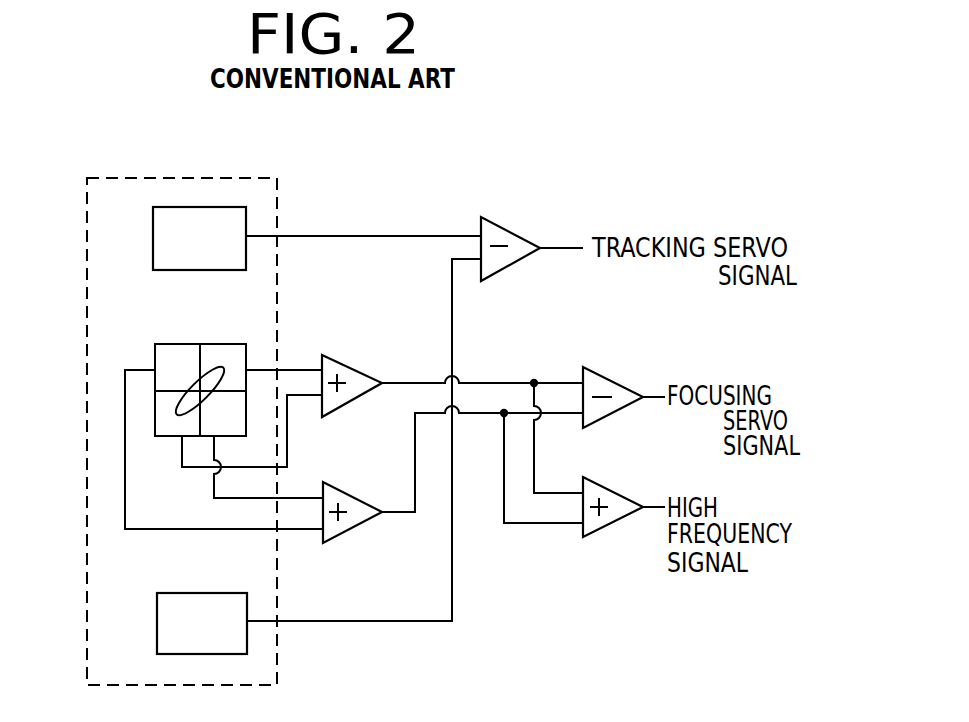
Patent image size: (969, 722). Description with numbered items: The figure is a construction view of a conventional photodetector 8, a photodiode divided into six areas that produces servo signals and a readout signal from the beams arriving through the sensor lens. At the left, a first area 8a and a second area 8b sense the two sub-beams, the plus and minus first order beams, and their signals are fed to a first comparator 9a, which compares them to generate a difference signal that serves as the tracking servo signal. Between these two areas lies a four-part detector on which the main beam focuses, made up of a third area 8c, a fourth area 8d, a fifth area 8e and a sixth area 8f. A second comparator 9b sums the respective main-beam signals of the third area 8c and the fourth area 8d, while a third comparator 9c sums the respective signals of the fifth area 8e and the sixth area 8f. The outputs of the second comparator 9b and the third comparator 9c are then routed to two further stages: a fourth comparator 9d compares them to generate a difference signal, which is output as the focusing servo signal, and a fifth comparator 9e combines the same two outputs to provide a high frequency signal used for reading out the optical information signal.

The photodetector 8 is at (278, 182).
The first area 8a is at (153, 233).
The second area 8b is at (157, 620).
The third area 8c is at (227, 353).
The fourth area 8d is at (172, 439).
The fifth area 8e is at (175, 352).
The sixth area 8f is at (235, 437).
The first comparator 9a is at (520, 233).
The second comparator 9b is at (343, 364).
The third comparator 9c is at (360, 527).
The fourth comparator 9d is at (618, 372).
The fifth comparator 9e is at (618, 482).